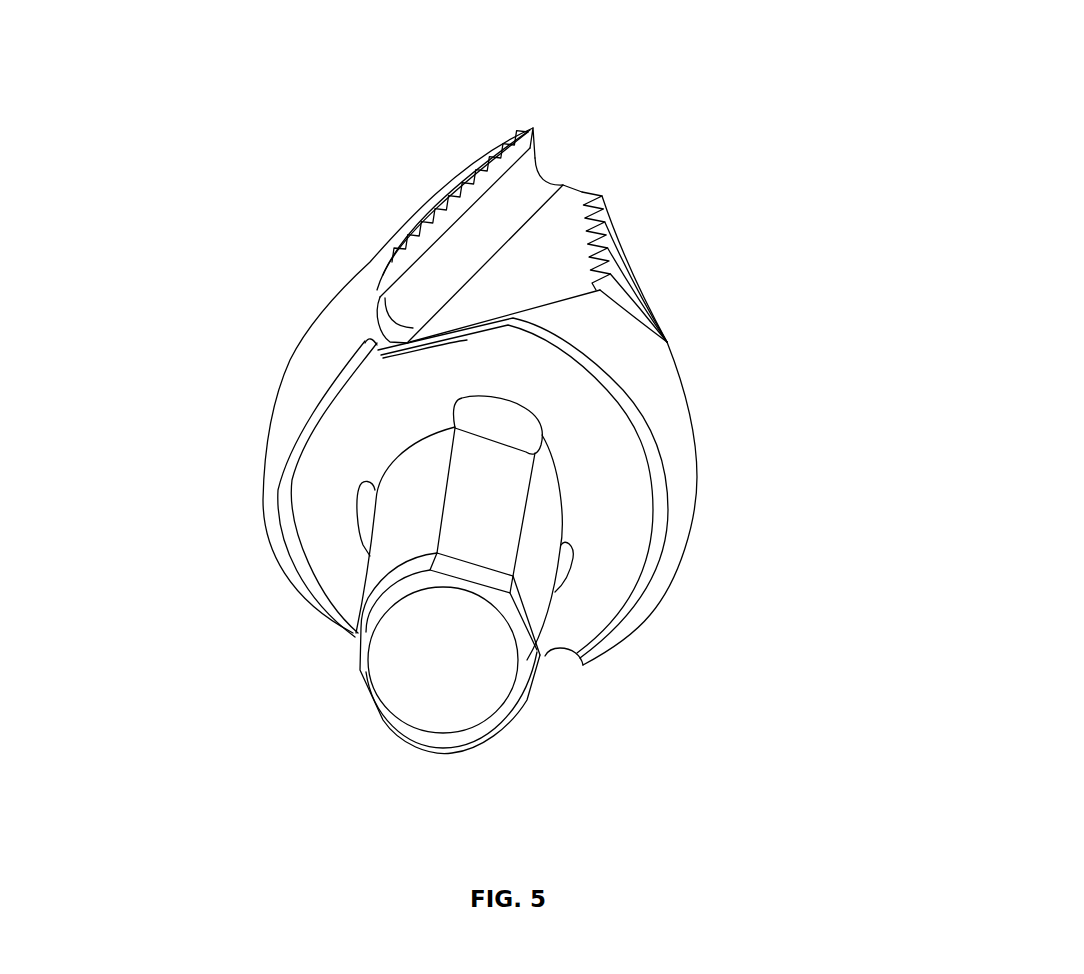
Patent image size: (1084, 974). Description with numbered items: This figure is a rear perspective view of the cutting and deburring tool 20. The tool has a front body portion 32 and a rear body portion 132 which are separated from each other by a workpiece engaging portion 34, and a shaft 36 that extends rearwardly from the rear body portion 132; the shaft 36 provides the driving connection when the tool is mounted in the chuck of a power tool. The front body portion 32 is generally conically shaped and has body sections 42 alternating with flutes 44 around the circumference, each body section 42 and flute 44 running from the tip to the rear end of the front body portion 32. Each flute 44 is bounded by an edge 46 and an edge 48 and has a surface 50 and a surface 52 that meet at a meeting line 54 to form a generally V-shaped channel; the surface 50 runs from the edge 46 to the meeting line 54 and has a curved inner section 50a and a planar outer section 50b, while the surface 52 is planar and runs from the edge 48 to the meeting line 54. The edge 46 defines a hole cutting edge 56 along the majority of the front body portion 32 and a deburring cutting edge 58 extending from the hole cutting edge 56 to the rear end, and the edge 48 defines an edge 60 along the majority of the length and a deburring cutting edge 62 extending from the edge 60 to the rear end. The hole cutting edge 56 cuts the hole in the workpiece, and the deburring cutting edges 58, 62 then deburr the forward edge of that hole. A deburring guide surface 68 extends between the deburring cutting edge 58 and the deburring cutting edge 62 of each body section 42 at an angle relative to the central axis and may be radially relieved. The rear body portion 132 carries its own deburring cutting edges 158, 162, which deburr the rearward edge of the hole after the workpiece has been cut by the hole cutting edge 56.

The cutting and deburring tool 20 is at (730, 72).
The front body portion 32 is at (661, 315).
The workpiece engaging portion 34 is at (383, 345).
The shaft 36 is at (420, 692).
The body section 42 is at (455, 172).
The flute 44 is at (480, 243).
The edge 46 is at (530, 150).
The edge 48 is at (607, 223).
The surface 50 is at (497, 170).
The inner section 50a is at (527, 225).
The outer section 50b is at (533, 150).
The surface 52 is at (607, 250).
The meeting line 54 is at (550, 268).
The hole cutting edge 56 is at (390, 242).
The deburring cutting edge 58 is at (373, 320).
The edge 60 is at (600, 270).
The deburring cutting edge 62 is at (607, 300).
The deburring guide surface 68 is at (302, 372).
The rear body portion 132 is at (653, 552).
The deburring cutting edge 158 is at (379, 347).
The deburring cutting edge 162 is at (467, 340).